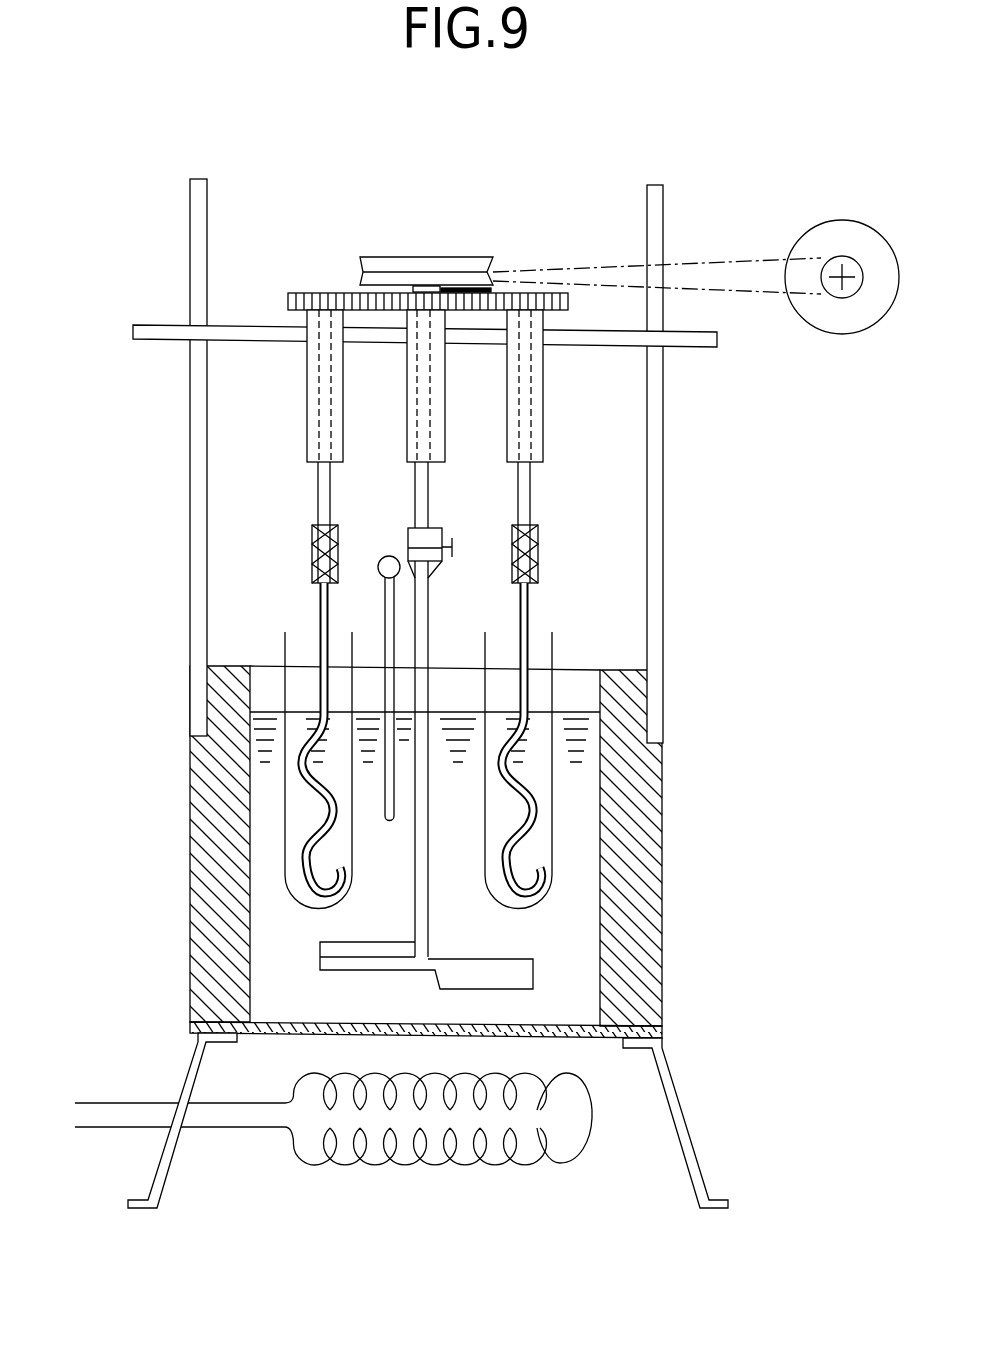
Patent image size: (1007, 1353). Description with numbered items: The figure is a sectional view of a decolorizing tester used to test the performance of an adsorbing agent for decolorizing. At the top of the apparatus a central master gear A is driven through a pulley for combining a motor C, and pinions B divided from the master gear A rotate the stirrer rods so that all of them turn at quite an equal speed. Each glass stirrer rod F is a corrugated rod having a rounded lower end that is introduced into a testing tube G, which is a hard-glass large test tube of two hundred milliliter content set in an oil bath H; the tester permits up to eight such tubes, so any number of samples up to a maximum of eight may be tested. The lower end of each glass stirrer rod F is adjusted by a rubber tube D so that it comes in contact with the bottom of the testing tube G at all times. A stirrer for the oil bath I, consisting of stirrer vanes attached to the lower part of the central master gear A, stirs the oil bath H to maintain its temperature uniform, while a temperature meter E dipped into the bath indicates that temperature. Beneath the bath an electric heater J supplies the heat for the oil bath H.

The master gear A is at (428, 257).
The pinion B is at (538, 292).
The pulley for combining a motor C is at (839, 221).
The rubber tube D is at (540, 553).
The temperature meter E is at (383, 618).
The glass stirrer rod F is at (513, 763).
The testing tube G is at (553, 842).
The oil bath H is at (548, 933).
The stirrer for the oil bath I is at (538, 972).
The electric heater J is at (592, 1124).